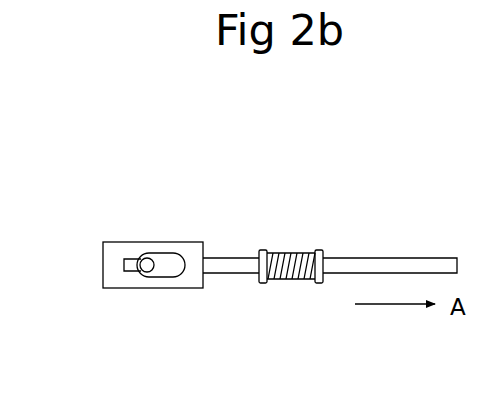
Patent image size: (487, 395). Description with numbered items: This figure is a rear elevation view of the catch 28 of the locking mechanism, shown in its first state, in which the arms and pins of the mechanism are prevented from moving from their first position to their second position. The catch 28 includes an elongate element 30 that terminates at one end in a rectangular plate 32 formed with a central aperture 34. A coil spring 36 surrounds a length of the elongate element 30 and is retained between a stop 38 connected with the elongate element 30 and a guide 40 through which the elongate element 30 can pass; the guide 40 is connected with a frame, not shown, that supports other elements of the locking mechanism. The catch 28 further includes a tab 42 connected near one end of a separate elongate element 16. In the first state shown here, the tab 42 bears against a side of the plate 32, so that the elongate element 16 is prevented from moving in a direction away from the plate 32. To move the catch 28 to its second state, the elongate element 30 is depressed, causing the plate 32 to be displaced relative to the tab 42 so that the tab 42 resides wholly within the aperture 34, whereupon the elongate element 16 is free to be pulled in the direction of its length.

The elongate element 16 is at (152, 254).
The catch 28 is at (250, 220).
The elongate element 30 is at (369, 257).
The rectangular plate 32 is at (200, 242).
The central aperture 34 is at (158, 277).
The coil spring 36 is at (295, 249).
The stop 38 is at (320, 285).
The guide 40 is at (263, 285).
The tab 42 is at (130, 260).